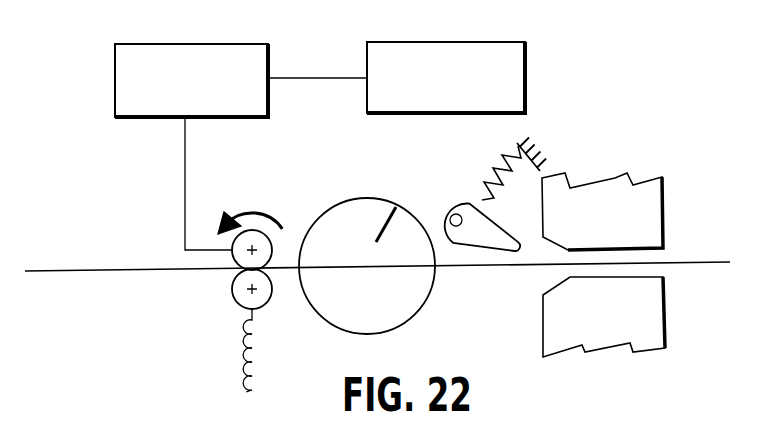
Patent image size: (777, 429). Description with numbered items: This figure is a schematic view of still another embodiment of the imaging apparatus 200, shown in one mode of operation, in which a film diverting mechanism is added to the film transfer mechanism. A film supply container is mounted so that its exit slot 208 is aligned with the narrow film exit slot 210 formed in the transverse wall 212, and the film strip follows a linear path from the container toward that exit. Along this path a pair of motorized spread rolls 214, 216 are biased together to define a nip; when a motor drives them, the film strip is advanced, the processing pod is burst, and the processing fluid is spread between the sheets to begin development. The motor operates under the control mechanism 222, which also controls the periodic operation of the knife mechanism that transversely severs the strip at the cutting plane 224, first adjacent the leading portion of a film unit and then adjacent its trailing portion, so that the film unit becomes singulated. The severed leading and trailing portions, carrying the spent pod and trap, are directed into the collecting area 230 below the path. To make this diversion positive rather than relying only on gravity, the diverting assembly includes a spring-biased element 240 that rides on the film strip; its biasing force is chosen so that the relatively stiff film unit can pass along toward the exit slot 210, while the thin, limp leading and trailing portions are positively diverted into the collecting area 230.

The imaging apparatus 200 is at (636, 73).
The exit slot 208 is at (203, 104).
The film exit slot 210 is at (687, 262).
The transverse wall 212 is at (615, 180).
The spread roll 214 is at (270, 250).
The spread roll 216 is at (257, 314).
The control mechanism 222 is at (460, 102).
The cutting plane 224 is at (367, 198).
The collecting area 230 is at (425, 300).
The spring-biased element 240 is at (460, 196).